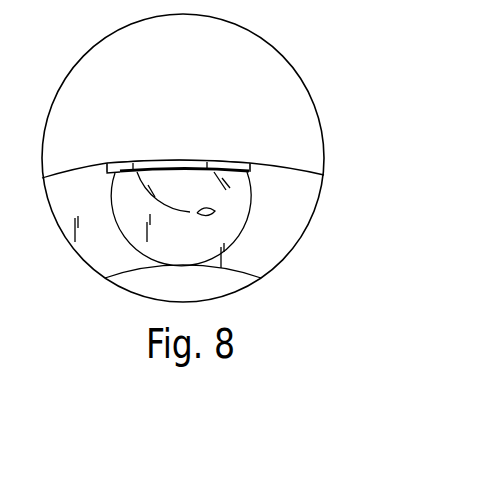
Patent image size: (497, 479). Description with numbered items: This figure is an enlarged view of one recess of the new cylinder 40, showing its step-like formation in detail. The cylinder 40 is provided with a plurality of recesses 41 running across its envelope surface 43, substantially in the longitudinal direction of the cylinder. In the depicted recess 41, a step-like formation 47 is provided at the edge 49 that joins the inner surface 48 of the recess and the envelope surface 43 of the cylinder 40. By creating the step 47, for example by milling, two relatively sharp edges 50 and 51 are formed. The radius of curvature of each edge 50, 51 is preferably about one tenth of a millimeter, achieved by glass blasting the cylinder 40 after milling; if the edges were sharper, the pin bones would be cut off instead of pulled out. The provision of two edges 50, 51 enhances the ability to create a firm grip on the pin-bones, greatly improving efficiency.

The cylinder 40 is at (297, 185).
The recess 41 is at (191, 193).
The envelope surface 43 is at (285, 165).
The step-like formation 47 is at (113, 162).
The inner surface 48 is at (215, 211).
The edge 49 is at (250, 163).
The edge 50 is at (107, 162).
The edge 51 is at (118, 162).